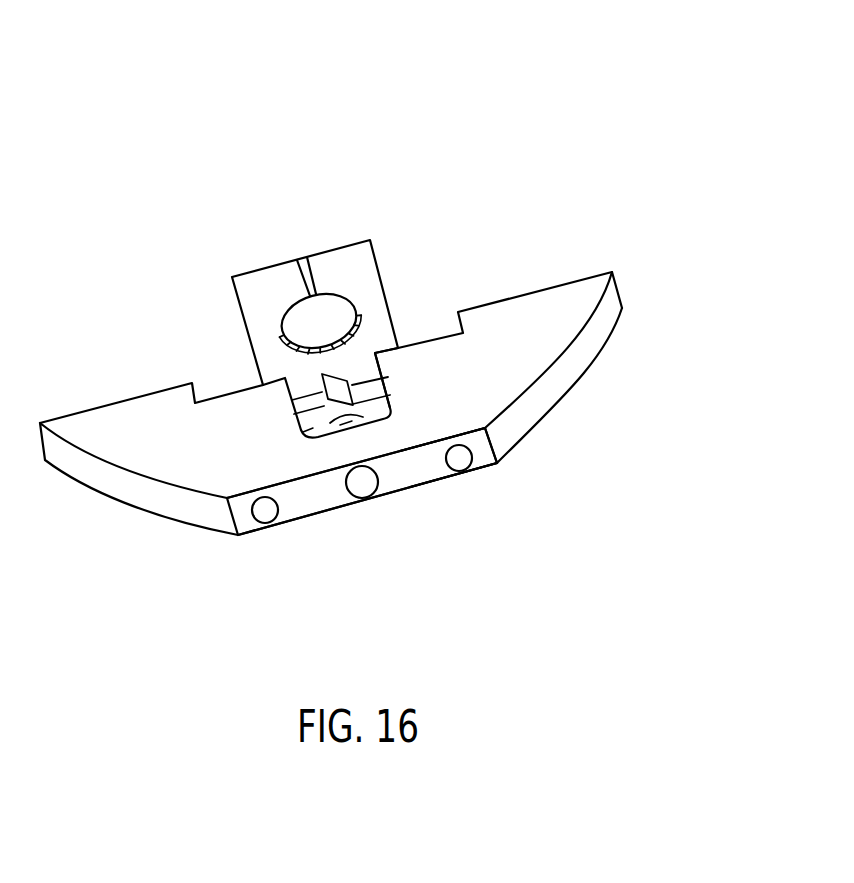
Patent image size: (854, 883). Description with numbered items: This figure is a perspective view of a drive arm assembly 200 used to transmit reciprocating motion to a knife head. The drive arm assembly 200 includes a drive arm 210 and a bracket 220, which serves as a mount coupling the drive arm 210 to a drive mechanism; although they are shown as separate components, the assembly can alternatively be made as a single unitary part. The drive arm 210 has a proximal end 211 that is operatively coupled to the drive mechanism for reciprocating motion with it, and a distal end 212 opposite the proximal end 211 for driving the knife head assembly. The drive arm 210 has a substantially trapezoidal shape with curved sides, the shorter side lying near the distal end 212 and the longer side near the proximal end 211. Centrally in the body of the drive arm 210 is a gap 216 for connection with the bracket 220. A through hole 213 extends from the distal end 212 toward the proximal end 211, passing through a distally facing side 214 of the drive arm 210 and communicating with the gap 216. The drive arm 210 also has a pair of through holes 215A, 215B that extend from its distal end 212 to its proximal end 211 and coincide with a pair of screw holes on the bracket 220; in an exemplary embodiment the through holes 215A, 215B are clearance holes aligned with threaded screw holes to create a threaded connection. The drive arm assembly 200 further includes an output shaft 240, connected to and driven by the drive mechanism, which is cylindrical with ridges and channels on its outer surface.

The drive arm assembly 200 is at (492, 166).
The drive arm 210 is at (578, 302).
The proximal end 211 is at (394, 351).
The distal end 212 is at (295, 552).
The through hole 213 is at (373, 496).
The distally facing side 214 is at (415, 473).
The through hole 215A is at (265, 523).
The through hole 215B is at (463, 473).
The gap 216 is at (378, 392).
The bracket 220 is at (318, 268).
The output shaft 240 is at (337, 315).